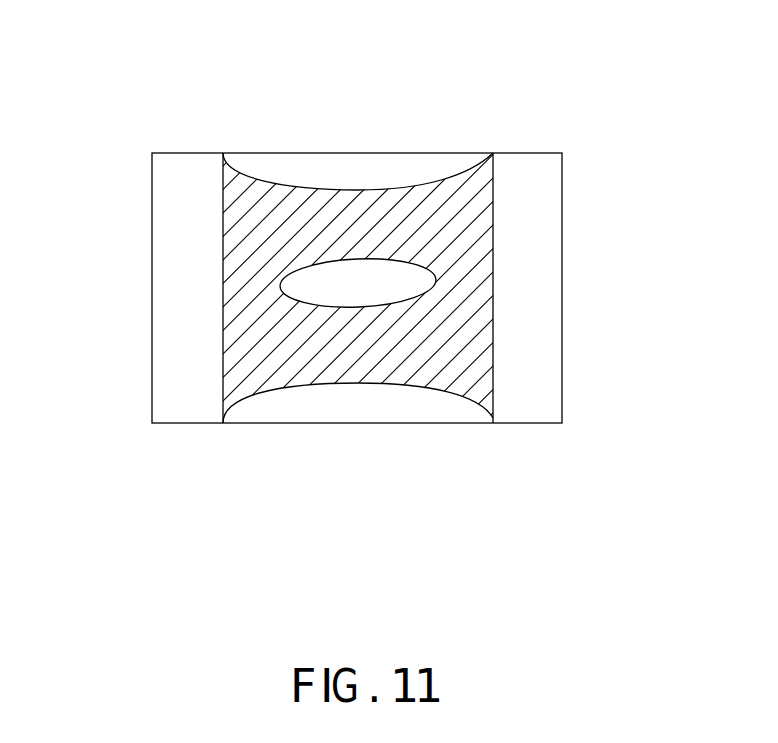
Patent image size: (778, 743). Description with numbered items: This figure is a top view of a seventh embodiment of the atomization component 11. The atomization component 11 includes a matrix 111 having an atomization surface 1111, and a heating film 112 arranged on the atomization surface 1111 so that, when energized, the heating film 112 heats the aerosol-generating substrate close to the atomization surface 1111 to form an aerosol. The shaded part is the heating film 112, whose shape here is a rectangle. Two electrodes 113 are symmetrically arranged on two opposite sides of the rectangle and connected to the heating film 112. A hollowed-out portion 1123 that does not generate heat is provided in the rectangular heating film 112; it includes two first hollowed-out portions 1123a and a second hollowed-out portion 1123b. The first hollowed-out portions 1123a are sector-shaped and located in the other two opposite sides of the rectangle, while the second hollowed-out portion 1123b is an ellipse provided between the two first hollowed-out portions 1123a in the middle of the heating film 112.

The atomization component 11 is at (87, 124).
The matrix 111 is at (348, 172).
The atomization surface 1111 is at (423, 177).
The heating film 112 is at (288, 340).
The electrode 113 is at (187, 273).
The hollowed-out portion 1123 is at (387, 418).
The first hollowed-out portion 1123a is at (382, 190).
The second hollowed-out portion 1123b is at (403, 273).